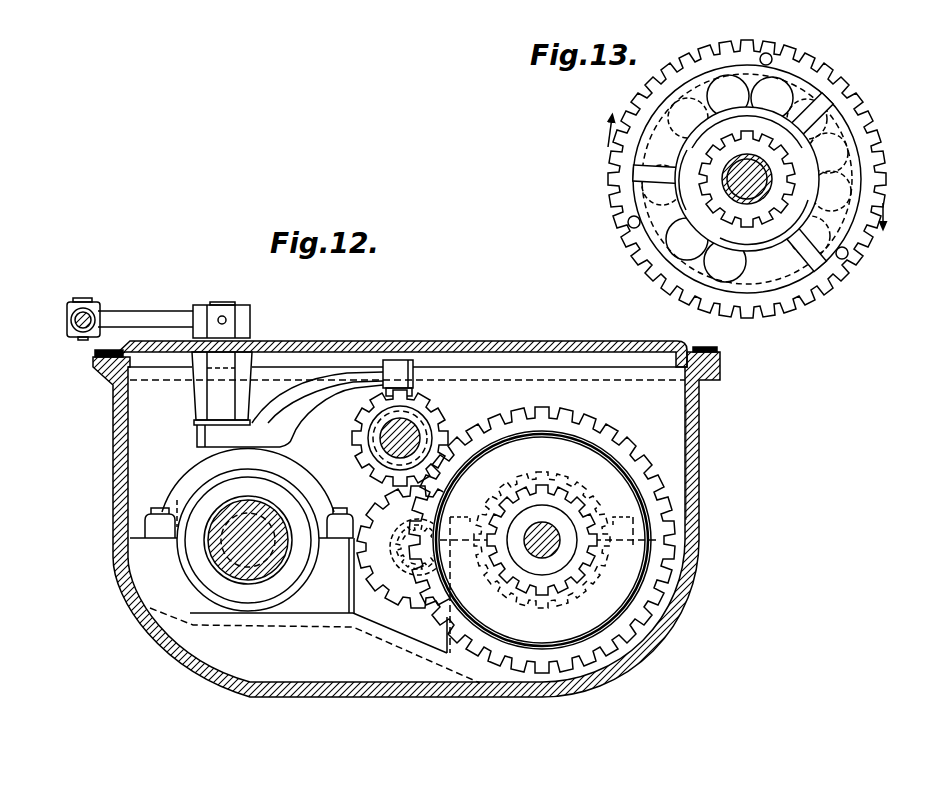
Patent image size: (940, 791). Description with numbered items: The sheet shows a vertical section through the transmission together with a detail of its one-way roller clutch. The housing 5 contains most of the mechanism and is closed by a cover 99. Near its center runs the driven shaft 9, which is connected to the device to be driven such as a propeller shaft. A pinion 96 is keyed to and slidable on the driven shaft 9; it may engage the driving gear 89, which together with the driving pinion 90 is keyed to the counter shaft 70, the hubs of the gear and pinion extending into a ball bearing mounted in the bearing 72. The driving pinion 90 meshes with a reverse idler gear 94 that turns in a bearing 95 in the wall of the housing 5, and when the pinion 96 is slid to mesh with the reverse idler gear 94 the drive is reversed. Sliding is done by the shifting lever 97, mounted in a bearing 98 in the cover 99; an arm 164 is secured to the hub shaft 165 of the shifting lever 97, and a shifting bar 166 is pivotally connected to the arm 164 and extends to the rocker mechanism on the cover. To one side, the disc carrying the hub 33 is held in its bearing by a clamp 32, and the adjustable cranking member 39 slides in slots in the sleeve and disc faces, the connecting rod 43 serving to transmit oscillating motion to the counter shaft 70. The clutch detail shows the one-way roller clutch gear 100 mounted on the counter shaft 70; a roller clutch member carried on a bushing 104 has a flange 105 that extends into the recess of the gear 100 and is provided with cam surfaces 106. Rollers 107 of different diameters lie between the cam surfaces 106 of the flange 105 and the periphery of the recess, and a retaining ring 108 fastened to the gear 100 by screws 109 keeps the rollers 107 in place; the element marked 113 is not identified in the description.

In FIG. 12, the housing 5 is at (113, 452).
In FIG. 12, the driven shaft 9 is at (382, 440).
In FIG. 12, the clamp 32 is at (188, 490).
In FIG. 12, the hub 33 is at (293, 563).
In FIG. 12, the adjustable cranking member 39 is at (217, 558).
In FIG. 12, the connecting rod 43 is at (572, 487).
In FIG. 12, the counter shaft 70 is at (550, 556).
In FIG. 13, the counter shaft 70 is at (720, 188).
In FIG. 12, the bearing 72 is at (680, 547).
In FIG. 12, the driving gear 89 is at (603, 424).
In FIG. 12, the driving pinion 90 is at (517, 588).
In FIG. 12, the reverse idler gear 94 is at (390, 597).
In FIG. 12, the bearing 95 is at (398, 556).
In FIG. 12, the pinion 96 is at (425, 413).
In FIG. 12, the shifting lever 97 is at (303, 378).
In FIG. 12, the bearing 98 is at (192, 397).
In FIG. 12, the cover 99 is at (412, 341).
In FIG. 12, the arm 164 is at (148, 312).
In FIG. 12, the hub shaft 165 is at (223, 304).
In FIG. 12, the shifting bar 166 is at (67, 322).
In FIG. 13, the one-way roller clutch gear 100 is at (790, 302).
In FIG. 13, the bushing 104 is at (765, 197).
In FIG. 13, the flange 105 is at (802, 153).
In FIG. 13, the cam surfaces 106 is at (800, 210).
In FIG. 13, the rollers 107 is at (817, 192).
In FIG. 13, the retaining ring 108 is at (840, 110).
In FIG. 13, the screws 109 is at (772, 62).
In FIG. 13, the cage arm 113 is at (772, 145).